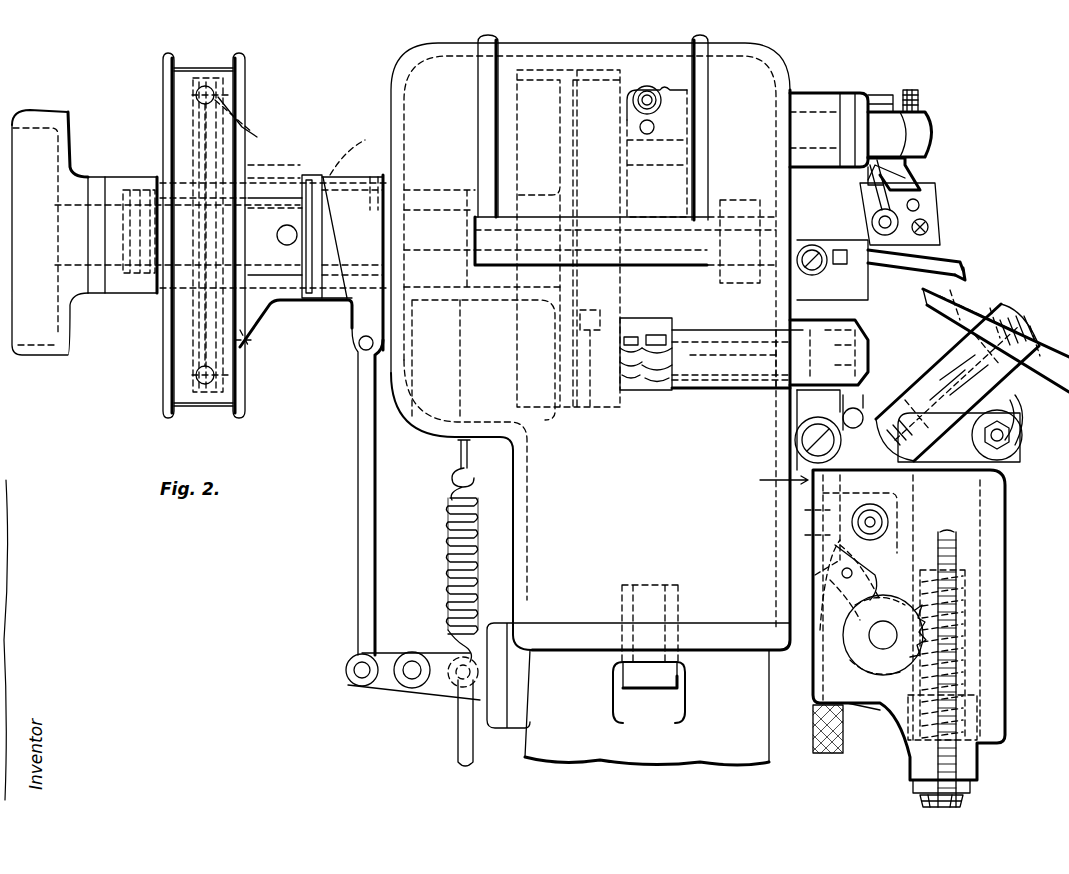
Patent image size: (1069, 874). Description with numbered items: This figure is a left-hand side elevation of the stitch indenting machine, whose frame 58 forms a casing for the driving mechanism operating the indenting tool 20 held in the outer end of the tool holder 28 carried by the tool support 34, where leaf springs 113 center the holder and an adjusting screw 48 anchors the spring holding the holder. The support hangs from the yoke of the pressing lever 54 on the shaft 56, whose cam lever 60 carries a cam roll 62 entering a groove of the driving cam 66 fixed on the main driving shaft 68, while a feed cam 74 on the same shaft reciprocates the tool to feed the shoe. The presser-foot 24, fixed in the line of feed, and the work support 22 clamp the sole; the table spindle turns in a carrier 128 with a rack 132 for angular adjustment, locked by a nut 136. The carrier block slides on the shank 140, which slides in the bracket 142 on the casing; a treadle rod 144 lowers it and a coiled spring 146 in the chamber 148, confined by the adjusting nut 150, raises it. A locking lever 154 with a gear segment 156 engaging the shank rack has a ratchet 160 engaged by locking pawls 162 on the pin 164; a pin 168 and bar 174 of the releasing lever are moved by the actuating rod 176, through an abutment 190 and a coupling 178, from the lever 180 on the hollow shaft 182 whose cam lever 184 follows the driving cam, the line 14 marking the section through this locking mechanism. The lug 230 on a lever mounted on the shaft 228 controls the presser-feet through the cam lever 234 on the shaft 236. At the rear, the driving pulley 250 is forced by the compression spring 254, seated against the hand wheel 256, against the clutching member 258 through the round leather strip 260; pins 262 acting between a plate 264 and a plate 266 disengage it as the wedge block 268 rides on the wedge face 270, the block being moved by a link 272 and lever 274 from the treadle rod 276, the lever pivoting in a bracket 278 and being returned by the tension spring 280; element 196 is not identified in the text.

The line 14— 14 is at (810, 660).
The indenting tool 20 is at (968, 278).
The work support 22 is at (985, 303).
The presser-foot 24 is at (950, 262).
The tool holder 28 is at (930, 212).
The tool support 34 is at (905, 168).
The adjusting screw 48 is at (912, 88).
The pressing lever 54 is at (918, 122).
The shaft 56 is at (805, 112).
The frame 58 is at (430, 428).
The cam lever 60 is at (647, 185).
The cam roll 62 is at (595, 300).
The driving cam 66 is at (500, 82).
The main driving shaft 68 is at (433, 220).
The feed cam 74 is at (745, 280).
The leaf springs 113 is at (925, 190).
The carrier 128 is at (945, 368).
The rack 132 is at (1018, 415).
The nut 136 is at (1022, 435).
The shank 140 is at (990, 464).
The bracket 142 is at (975, 505).
The treadle rod 144 is at (953, 552).
The coiled spring 146 is at (967, 590).
The chamber 148 is at (968, 638).
The adjusting nut 150 is at (920, 797).
The locking lever 154 is at (850, 705).
The gear segment 156 is at (895, 673).
The ratchet 160 is at (790, 612).
The locking pawls 162 is at (790, 575).
The pin 164 is at (875, 520).
The pin 168 is at (855, 570).
The bar 174 is at (795, 510).
The actuating rod 176 is at (815, 760).
The coupling 178 is at (855, 405).
The lever 180 is at (858, 340).
The hollow shaft 182 is at (740, 375).
The cam lever 184 is at (660, 390).
The abutment 190 is at (795, 535).
The screw 196 is at (830, 268).
The shaft 228 is at (796, 440).
The lug 230 is at (805, 405).
The cam lever 234 is at (630, 390).
The shaft 236 is at (740, 345).
The driving pulley 250 is at (165, 96).
The compression spring 254 is at (137, 190).
The hand wheel 256 is at (42, 350).
The clutching member 258 is at (257, 117).
The round leather strip 260 is at (242, 96).
The pins 262 is at (272, 178).
The plate 264 is at (275, 306).
The plate 266 is at (310, 292).
The wedge block 268 is at (312, 175).
The wedge face 270 is at (365, 135).
The link 272 is at (358, 440).
The lever 274 is at (380, 690).
The treadle rod 276 is at (458, 742).
The bracket 278 is at (445, 690).
The tension spring 280 is at (450, 525).